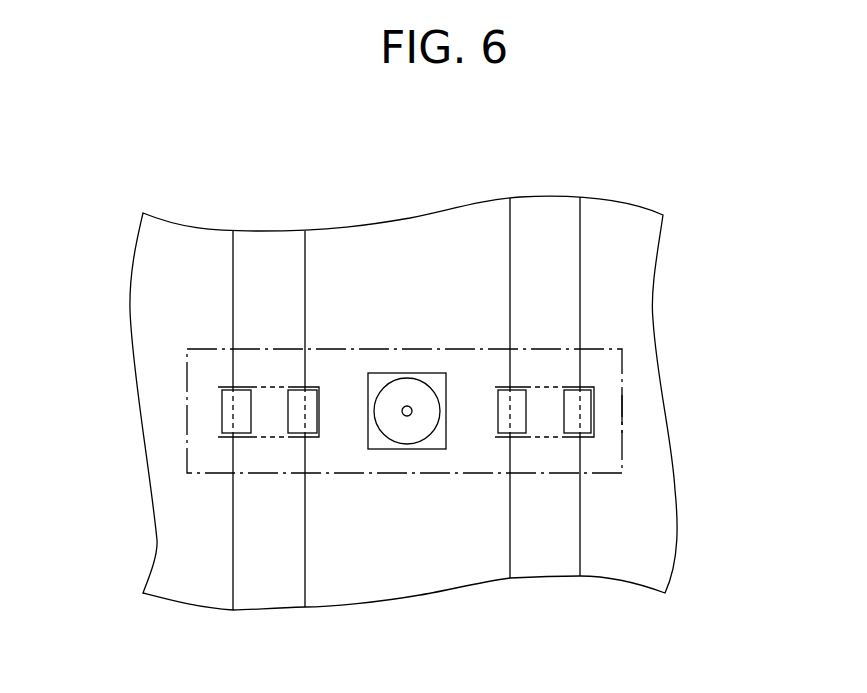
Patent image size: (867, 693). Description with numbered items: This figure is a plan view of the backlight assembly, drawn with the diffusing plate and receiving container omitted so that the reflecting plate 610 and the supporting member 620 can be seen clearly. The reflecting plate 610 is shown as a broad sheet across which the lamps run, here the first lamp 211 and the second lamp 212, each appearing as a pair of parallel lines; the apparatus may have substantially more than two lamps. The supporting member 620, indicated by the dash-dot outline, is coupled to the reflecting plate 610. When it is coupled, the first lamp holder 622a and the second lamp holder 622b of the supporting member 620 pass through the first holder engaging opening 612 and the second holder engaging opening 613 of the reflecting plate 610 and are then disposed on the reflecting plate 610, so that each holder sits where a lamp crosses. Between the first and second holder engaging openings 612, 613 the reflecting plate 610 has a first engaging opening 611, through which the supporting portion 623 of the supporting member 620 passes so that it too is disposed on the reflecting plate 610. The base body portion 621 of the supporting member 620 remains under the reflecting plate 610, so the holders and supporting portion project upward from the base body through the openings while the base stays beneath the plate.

The reflecting plate 610 is at (633, 268).
The first lamp 211 is at (267, 245).
The second lamp 212 is at (542, 210).
The supporting member 620 is at (631, 381).
The base body portion 621 is at (622, 414).
The first engaging opening 611 is at (407, 373).
The supporting portion 623 is at (404, 437).
The first holder engaging opening 612 is at (312, 387).
The second holder engaging opening 613 is at (503, 387).
The first lamp holder 622a is at (227, 412).
The second lamp holder 622b is at (587, 417).